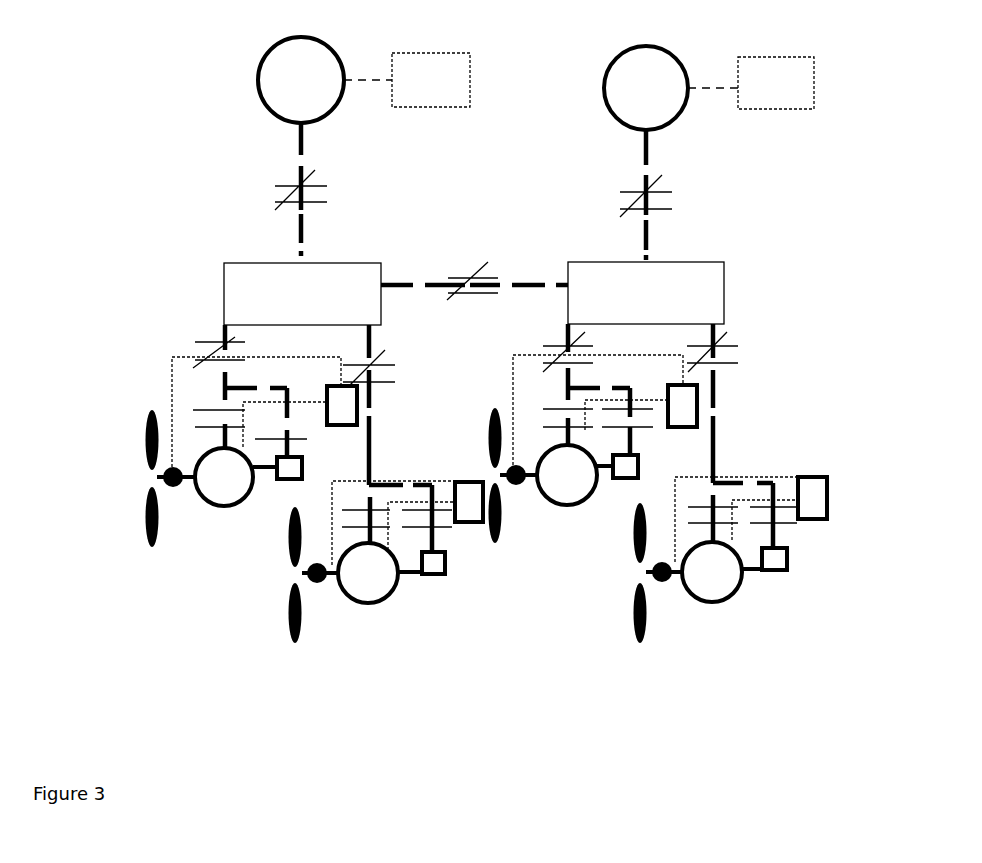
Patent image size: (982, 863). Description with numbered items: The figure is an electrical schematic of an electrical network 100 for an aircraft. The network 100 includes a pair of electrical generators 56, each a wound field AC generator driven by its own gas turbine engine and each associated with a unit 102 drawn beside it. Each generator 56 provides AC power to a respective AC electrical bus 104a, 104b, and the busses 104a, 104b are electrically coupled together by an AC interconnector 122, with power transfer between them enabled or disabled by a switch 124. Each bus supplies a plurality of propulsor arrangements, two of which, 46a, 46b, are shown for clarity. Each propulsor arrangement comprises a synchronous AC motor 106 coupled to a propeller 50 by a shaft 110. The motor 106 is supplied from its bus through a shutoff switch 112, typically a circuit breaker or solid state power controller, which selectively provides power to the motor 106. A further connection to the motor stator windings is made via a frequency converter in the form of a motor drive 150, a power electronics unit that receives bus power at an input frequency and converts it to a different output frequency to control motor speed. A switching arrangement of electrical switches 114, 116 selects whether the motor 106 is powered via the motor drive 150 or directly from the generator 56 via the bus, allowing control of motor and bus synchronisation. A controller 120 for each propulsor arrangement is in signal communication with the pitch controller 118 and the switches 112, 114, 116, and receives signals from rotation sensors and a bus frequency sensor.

The propulsor arrangement 46a is at (152, 336).
The propulsor arrangement 46b is at (762, 289).
The propeller 50 is at (148, 550).
The electrical generator 56 is at (268, 122).
The electrical network 100 is at (687, 700).
The controller 102 is at (433, 54).
The AC electrical bus 104a is at (345, 262).
The AC electrical bus 104b is at (667, 262).
The synchronous AC motor 106 is at (240, 507).
The shaft 110 is at (174, 487).
The shutoff switch 112 is at (215, 345).
The electrical switch 114 is at (307, 423).
The electrical switch 116 is at (227, 410).
The pitch controller 118 is at (192, 480).
The controller 120 is at (358, 395).
The AC interconnector 122 is at (553, 283).
The switch 124 is at (448, 278).
The motor drive 150 is at (287, 480).